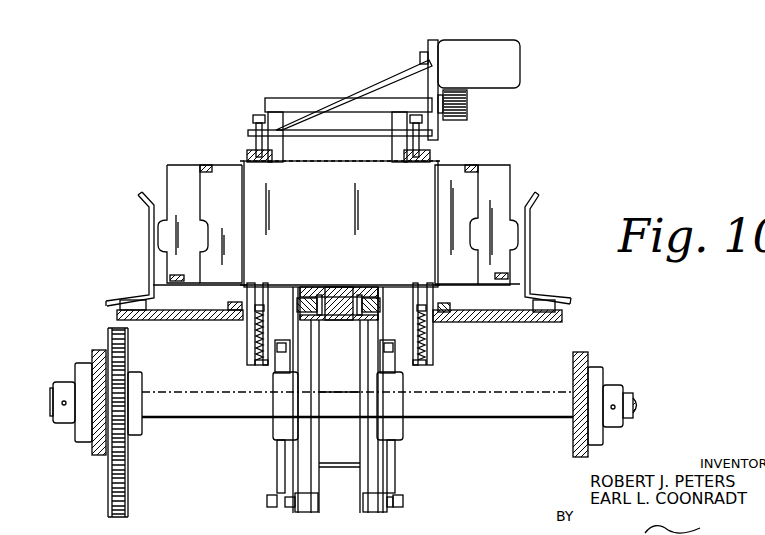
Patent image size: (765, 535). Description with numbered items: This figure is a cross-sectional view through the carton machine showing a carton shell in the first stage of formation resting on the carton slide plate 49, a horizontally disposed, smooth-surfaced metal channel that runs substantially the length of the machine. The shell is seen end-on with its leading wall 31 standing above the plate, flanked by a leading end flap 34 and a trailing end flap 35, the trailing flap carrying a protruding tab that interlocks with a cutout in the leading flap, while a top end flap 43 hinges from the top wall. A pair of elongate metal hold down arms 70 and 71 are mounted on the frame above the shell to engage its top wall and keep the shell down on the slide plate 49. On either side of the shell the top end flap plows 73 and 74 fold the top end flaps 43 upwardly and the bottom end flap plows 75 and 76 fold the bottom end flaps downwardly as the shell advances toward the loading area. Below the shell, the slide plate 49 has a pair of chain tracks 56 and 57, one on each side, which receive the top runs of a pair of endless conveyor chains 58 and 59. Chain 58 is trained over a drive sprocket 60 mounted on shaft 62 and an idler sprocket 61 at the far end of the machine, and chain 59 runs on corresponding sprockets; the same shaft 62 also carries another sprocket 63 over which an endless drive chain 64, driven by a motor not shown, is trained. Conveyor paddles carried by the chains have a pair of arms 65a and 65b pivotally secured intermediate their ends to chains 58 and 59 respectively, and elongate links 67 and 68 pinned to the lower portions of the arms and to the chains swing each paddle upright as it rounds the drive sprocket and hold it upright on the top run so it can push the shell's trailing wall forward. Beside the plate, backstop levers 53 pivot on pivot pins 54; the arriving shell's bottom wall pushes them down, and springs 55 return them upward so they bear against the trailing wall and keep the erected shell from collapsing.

The leading wall 31 is at (342, 200).
The leading end flap 34 is at (228, 211).
The trailing end flap 35 is at (190, 206).
The top end flap 43 is at (220, 162).
The carton slide plate 49 is at (363, 267).
The backstop lever 53 is at (266, 297).
The pivot pin 54 is at (262, 298).
The spring 55 is at (257, 350).
The chain track 56 is at (300, 303).
The chain track 57 is at (378, 300).
The endless conveyor chain 58 is at (310, 298).
The endless conveyor chain 59 is at (373, 297).
The drive sprocket 60 is at (305, 438).
The idler sprocket 61 is at (403, 437).
The shaft 62 is at (167, 412).
The sprocket 63 is at (125, 345).
The endless drive chain 64 is at (125, 477).
The arm 65a is at (283, 477).
The arm 65b is at (393, 482).
The elongate link 67 is at (275, 465).
The elongate link 68 is at (402, 467).
The hold down arm 70 is at (257, 157).
The hold down arm 71 is at (430, 155).
The top end flap plow 73 is at (200, 167).
The top end flap plow 74 is at (472, 163).
The bottom end flap plow 75 is at (177, 273).
The bottom end flap plow 76 is at (500, 277).